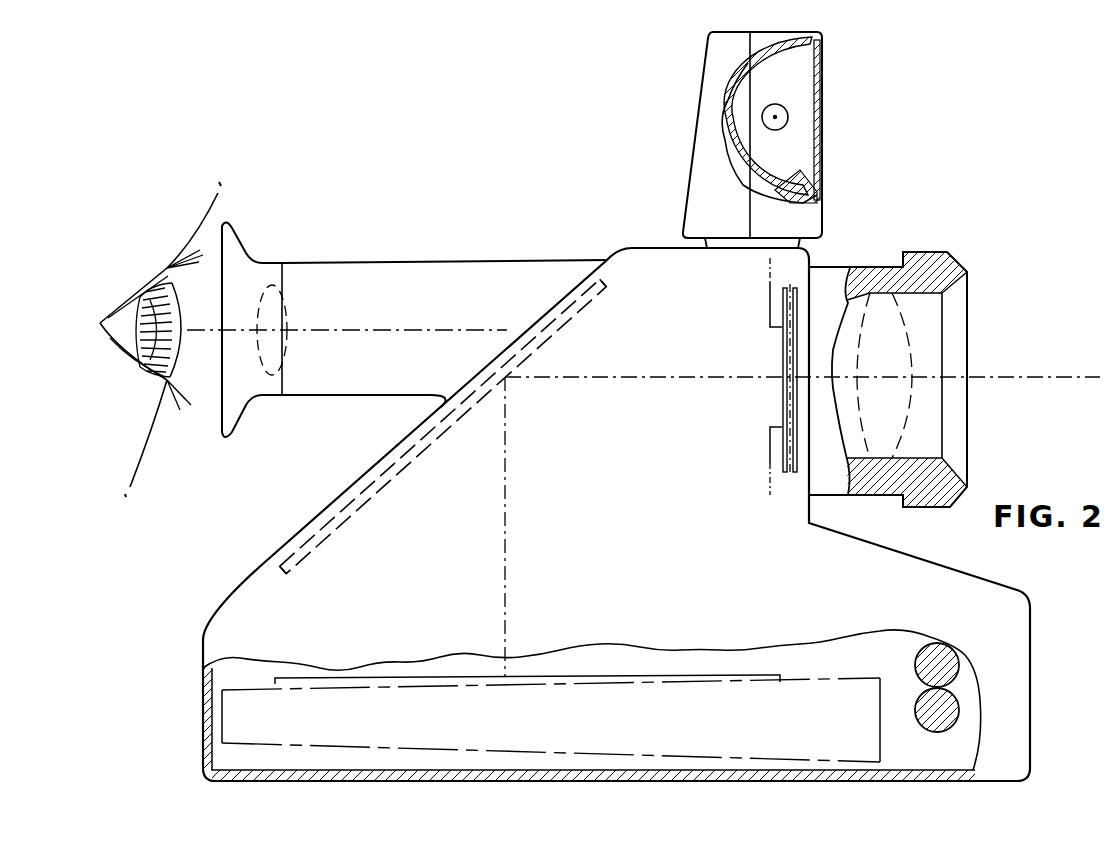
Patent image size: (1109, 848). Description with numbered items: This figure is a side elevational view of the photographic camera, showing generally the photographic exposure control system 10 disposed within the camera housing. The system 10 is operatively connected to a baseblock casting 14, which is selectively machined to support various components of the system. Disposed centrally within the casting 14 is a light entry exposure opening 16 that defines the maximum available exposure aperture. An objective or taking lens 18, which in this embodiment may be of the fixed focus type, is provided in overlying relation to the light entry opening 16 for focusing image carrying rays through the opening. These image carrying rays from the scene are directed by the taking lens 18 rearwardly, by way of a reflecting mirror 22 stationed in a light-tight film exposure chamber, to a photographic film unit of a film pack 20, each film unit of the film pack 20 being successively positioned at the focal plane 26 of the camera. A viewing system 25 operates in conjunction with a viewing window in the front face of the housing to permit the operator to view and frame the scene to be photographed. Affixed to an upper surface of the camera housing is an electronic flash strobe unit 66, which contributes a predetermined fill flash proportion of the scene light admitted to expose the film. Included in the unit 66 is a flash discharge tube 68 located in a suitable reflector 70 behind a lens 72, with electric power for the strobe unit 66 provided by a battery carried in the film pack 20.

The photographic exposure control system 10 is at (766, 355).
The baseblock casting 14 is at (767, 297).
The light entry exposure opening 16 is at (767, 417).
The taking lens 18 is at (908, 343).
The film pack 20 is at (662, 675).
The reflecting mirror 22 is at (385, 483).
The viewing system 25 is at (433, 262).
The focal plane 26 is at (517, 683).
The electronic flash strobe unit 66 is at (825, 38).
The flash discharge tube 68 is at (778, 130).
The reflector 70 is at (758, 88).
The lens 72 is at (818, 80).